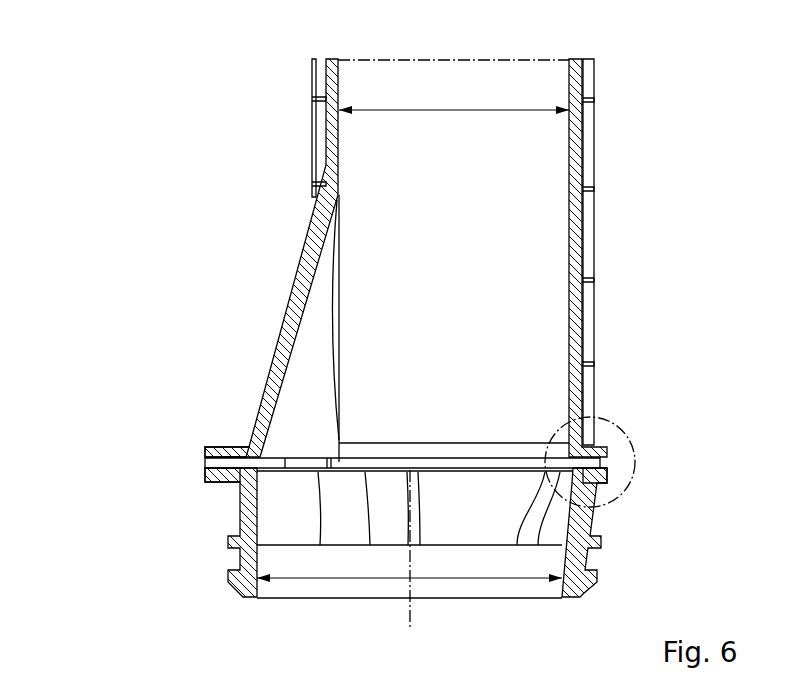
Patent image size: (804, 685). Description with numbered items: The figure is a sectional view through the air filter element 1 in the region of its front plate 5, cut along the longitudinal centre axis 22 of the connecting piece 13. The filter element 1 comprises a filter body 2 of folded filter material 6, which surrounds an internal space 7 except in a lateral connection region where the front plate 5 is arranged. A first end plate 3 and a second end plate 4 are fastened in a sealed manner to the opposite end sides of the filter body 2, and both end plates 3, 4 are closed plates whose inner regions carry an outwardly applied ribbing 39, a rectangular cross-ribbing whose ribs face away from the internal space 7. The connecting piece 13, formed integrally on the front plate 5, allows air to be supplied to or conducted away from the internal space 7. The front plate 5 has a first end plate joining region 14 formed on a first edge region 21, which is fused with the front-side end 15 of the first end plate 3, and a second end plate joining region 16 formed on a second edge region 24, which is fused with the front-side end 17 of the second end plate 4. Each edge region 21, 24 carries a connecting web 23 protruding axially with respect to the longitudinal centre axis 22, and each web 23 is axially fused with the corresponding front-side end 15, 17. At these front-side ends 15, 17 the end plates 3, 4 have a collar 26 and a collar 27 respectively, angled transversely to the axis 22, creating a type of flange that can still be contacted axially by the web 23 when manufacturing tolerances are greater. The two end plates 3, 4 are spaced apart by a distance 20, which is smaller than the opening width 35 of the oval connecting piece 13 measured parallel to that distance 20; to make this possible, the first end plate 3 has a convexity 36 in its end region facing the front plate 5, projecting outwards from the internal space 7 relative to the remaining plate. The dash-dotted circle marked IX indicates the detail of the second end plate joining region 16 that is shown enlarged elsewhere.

The air filter element 1 is at (174, 116).
The filter body 2 is at (424, 82).
The first end plate 3 is at (302, 72).
The second end plate 4 is at (608, 185).
The front plate 5 is at (602, 511).
The filter material 6 is at (503, 75).
The internal space 7 is at (433, 276).
The connecting piece 13 is at (592, 576).
The first end plate joining region 14 is at (235, 495).
The front-side end of the first end plate 15 is at (232, 457).
The second end plate joining region 16 is at (612, 492).
The front-side end of the second end plate 17 is at (603, 445).
The distance 20 is at (450, 112).
The first edge region 21 is at (205, 477).
The longitudinal centre axis 22 is at (412, 628).
The connecting web 23 is at (205, 463).
The second edge region 24 is at (607, 478).
The collar 26 is at (215, 447).
The collar 27 is at (603, 452).
The opening width 35 is at (365, 580).
The convexity 36 is at (300, 297).
The ribbing 39 is at (318, 127).
The detail section IX is at (645, 440).